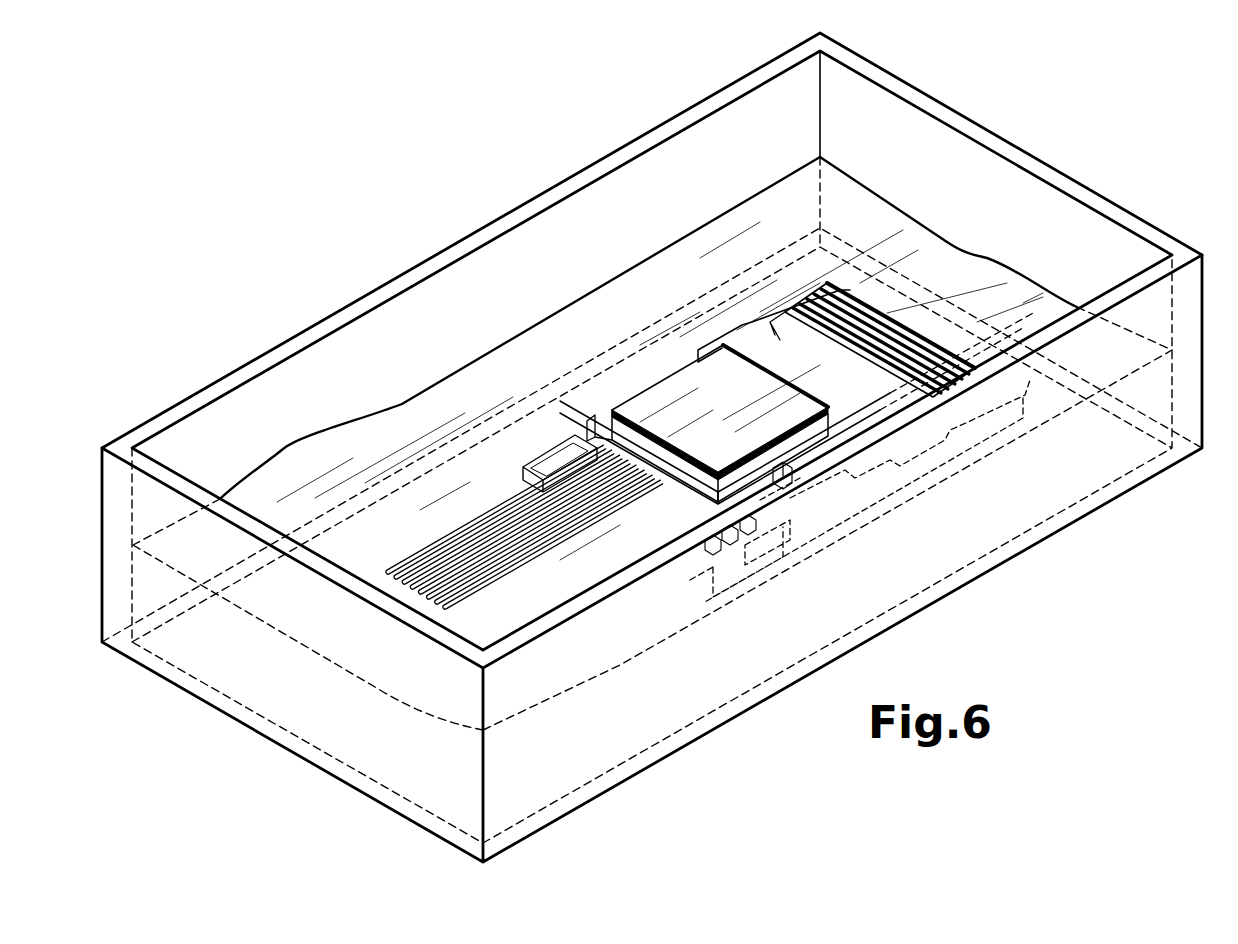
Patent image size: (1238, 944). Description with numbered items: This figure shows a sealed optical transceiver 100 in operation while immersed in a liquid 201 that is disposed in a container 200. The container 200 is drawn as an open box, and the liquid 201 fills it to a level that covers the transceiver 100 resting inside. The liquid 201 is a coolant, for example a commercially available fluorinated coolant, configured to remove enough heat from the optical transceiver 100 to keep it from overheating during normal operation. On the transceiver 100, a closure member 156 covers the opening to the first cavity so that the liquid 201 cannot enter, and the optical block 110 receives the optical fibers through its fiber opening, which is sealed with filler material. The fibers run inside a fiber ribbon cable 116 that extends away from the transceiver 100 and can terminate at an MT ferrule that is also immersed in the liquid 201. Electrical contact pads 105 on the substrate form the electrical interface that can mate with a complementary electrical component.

The sealed optical transceiver 100 is at (795, 303).
The electrical contact pads 105 is at (903, 323).
The optical block 110 is at (805, 445).
The fiber ribbon cable 116 is at (530, 556).
The closure member 156 is at (640, 392).
The container 200 is at (291, 340).
The liquid 201 is at (857, 183).